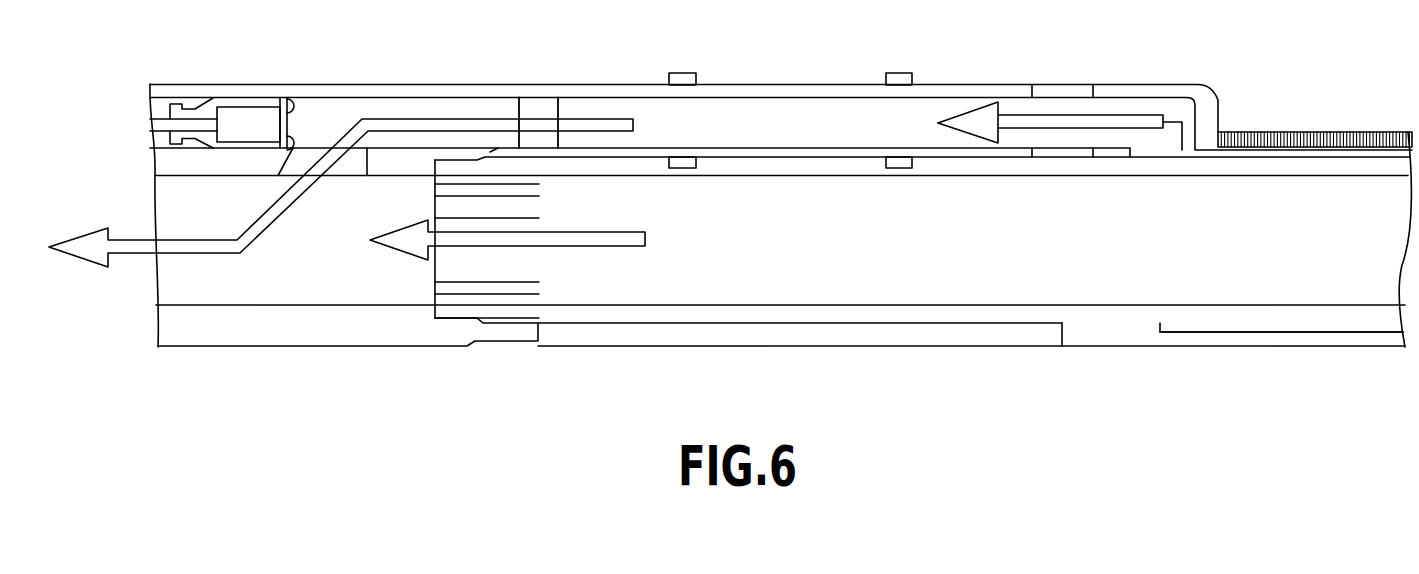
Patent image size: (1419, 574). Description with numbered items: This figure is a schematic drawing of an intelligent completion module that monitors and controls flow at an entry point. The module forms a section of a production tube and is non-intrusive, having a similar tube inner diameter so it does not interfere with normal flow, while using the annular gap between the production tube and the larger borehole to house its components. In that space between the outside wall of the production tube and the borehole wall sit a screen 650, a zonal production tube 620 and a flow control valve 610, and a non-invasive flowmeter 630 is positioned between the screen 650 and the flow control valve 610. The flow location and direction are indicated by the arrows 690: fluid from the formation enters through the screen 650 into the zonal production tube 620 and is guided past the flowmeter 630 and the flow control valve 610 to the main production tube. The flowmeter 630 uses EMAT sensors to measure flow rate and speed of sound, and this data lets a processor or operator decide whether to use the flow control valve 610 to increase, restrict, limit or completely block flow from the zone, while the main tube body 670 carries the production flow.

The flow control valve 610 is at (252, 122).
The zonal production tube 620 is at (540, 83).
The non-invasive flowmeter 630 is at (892, 80).
The screen 650 is at (1307, 143).
The outer housing body 670 is at (1217, 273).
The arrows 690 is at (1058, 115).